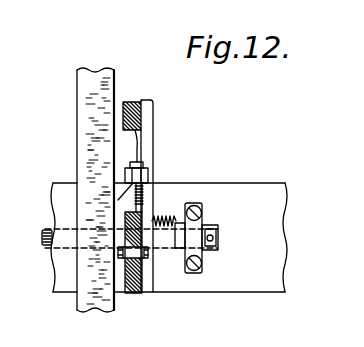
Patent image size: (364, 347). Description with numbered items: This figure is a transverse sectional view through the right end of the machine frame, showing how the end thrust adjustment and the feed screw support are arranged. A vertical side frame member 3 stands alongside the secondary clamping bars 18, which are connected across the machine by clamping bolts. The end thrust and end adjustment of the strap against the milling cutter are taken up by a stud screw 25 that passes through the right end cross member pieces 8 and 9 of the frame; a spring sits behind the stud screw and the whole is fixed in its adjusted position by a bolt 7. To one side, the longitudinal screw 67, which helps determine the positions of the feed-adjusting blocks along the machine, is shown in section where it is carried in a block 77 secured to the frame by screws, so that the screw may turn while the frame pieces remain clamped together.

The clamping bars 18 is at (107, 83).
The side frame member 3 is at (232, 195).
The longitudinal screw 67 is at (44, 231).
The stud screws 25 is at (165, 213).
The bolt 7 is at (158, 250).
The block 77 is at (204, 273).
The right end cross member piece 9 is at (141, 293).
The right end cross member piece 8 is at (116, 293).